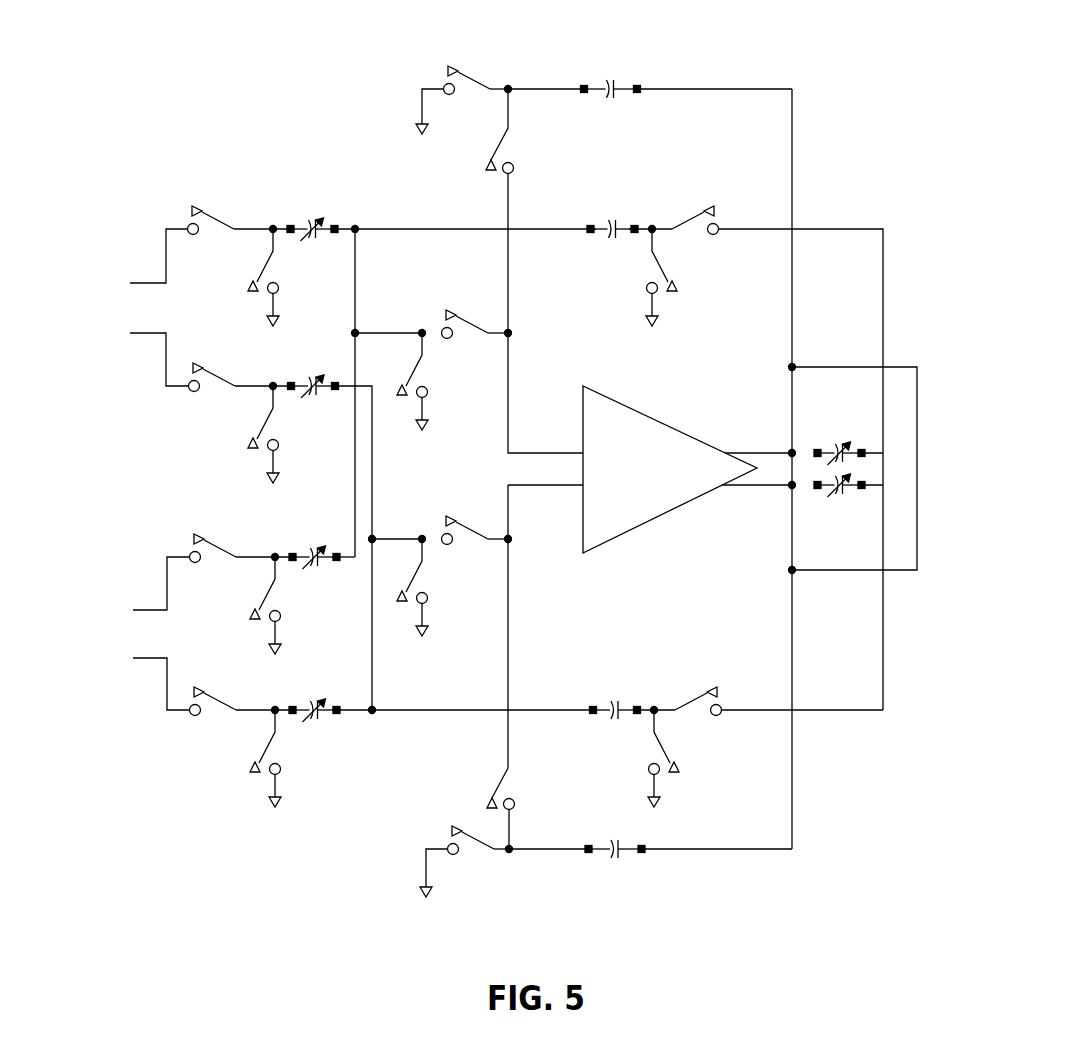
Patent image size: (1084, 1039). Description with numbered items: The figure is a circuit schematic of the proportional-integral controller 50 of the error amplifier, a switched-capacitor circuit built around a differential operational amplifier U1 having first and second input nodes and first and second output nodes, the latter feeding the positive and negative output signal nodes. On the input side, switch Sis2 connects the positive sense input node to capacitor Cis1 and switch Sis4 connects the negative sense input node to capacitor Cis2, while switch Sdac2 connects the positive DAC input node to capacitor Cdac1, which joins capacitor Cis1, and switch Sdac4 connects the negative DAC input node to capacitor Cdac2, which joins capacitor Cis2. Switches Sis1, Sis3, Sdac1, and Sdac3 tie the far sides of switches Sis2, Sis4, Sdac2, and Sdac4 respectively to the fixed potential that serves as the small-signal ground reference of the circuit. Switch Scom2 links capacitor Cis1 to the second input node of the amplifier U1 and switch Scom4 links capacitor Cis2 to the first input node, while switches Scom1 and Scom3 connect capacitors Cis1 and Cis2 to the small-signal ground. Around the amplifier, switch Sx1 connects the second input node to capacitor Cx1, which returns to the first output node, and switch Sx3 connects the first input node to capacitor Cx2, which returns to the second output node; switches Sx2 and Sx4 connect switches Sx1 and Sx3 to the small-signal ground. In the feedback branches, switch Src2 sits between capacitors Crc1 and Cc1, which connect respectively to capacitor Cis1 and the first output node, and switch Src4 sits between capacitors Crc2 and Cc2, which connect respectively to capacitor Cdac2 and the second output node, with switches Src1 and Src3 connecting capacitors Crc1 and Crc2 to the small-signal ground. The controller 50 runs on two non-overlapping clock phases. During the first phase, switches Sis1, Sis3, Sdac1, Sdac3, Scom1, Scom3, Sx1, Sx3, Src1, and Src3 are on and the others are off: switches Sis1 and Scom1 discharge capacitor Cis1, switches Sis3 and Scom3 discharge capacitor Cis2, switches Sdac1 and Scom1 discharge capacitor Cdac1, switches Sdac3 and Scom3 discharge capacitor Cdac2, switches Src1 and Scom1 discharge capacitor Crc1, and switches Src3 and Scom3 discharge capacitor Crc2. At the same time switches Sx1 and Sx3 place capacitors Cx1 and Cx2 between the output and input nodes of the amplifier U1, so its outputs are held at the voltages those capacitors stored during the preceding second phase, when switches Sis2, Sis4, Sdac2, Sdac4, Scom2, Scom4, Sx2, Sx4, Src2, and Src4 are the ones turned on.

The proportional-integral controller 50 is at (256, 74).
The differential operational amplifier U1 is at (670, 469).
The switch Sx1 is at (507, 131).
The switch Sx2 is at (468, 64).
The switch Sx3 is at (516, 785).
The switch Sx4 is at (460, 826).
The capacitor Cx1 is at (611, 76).
The capacitor Cx2 is at (615, 862).
The capacitor Cc1 is at (839, 440).
The capacitor Cc2 is at (839, 498).
The capacitor Crc1 is at (612, 216).
The capacitor Crc2 is at (615, 697).
The capacitor Cis1 is at (312, 218).
The capacitor Cis2 is at (313, 373).
The capacitor Cdac1 is at (315, 545).
The capacitor Cdac2 is at (315, 698).
The switch Sis1 is at (274, 277).
The switch Sis2 is at (213, 204).
The switch Sis3 is at (274, 434).
The switch Sis4 is at (213, 356).
The switch Sdac1 is at (284, 605).
The switch Sdac2 is at (212, 528).
The switch Sdac3 is at (284, 758).
The switch Sdac4 is at (212, 682).
The switch Scom1 is at (434, 381).
The switch Scom2 is at (460, 307).
The switch Scom3 is at (434, 587).
The switch Scom4 is at (460, 512).
The switch Src1 is at (687, 277).
The switch Src2 is at (692, 204).
The switch Src3 is at (684, 758).
The switch Src4 is at (696, 683).